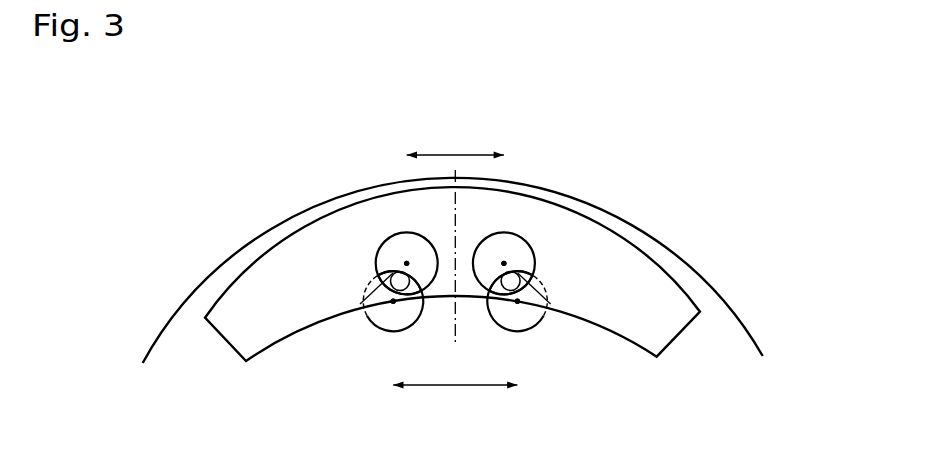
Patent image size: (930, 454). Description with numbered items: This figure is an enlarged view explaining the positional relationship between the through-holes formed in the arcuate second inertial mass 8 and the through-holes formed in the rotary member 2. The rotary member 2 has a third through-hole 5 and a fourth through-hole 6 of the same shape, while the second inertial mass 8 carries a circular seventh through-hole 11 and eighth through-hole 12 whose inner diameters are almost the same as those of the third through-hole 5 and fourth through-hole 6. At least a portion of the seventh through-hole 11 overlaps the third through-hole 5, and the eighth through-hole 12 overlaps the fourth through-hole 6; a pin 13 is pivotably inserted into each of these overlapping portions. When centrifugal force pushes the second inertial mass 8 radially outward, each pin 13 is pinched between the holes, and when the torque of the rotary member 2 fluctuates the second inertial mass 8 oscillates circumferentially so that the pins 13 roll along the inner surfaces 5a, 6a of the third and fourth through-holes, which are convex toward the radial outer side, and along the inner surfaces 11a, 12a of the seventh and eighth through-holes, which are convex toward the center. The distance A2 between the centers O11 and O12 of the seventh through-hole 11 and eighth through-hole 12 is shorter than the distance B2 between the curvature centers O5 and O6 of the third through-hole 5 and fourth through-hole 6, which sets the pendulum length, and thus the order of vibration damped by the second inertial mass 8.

The rotary member 2 is at (723, 313).
The second inertial mass 8 is at (628, 255).
The seventh through-hole 11 is at (392, 247).
The eighth through-hole 12 is at (533, 252).
The pin 13 is at (383, 276).
The third through-hole 5 is at (388, 305).
The fourth through-hole 6 is at (523, 305).
The inner surface of the third through-hole 5a is at (360, 304).
The inner surface of the fourth through-hole 6a is at (551, 304).
The inner surface of the seventh through-hole 11a is at (415, 286).
The inner surface of the eighth through-hole 12a is at (496, 286).
The center of the seventh through-hole O11 is at (407, 263).
The center of the eighth through-hole O12 is at (504, 263).
The curvature center of the third through-hole O5 is at (393, 301).
The curvature center of the fourth through-hole O6 is at (517, 301).
The distance between centers O11 and O12 A2 is at (455, 146).
The distance between curvature centers O5 and O6 B2 is at (455, 375).